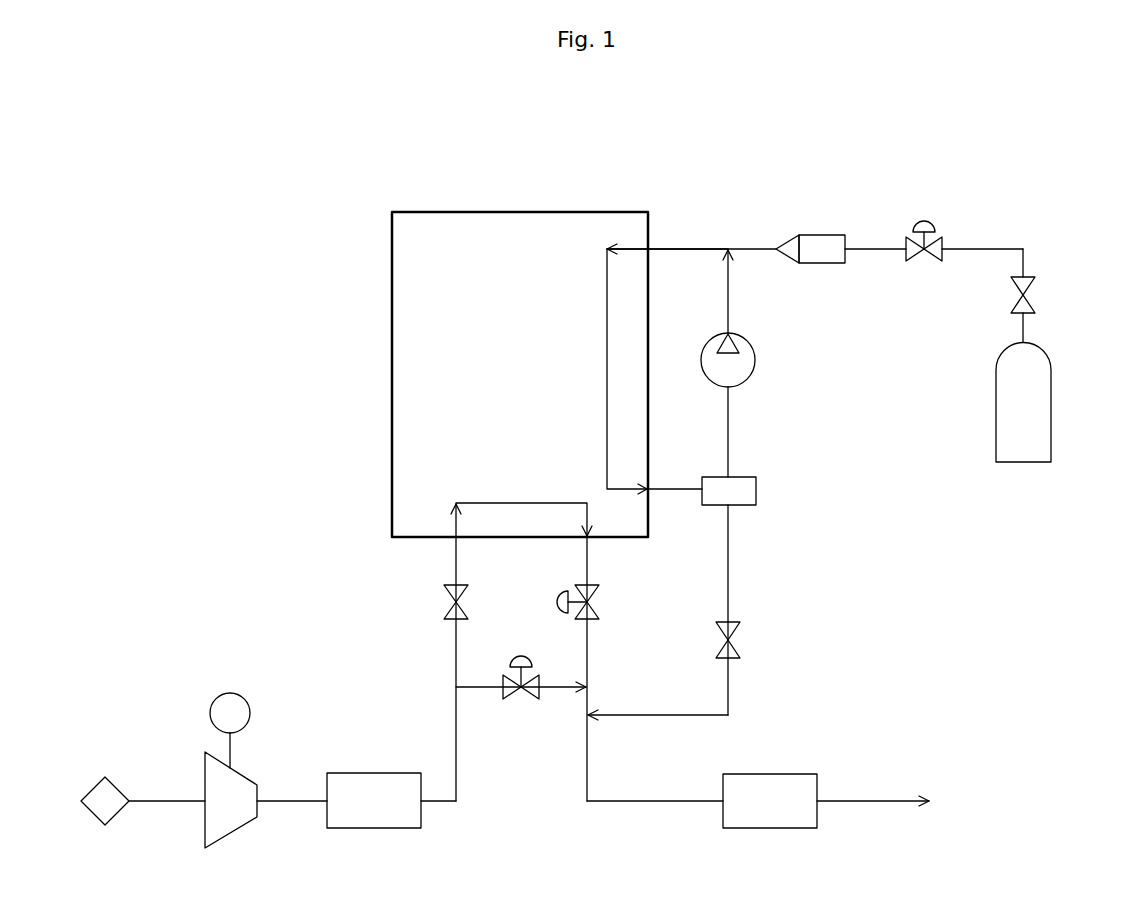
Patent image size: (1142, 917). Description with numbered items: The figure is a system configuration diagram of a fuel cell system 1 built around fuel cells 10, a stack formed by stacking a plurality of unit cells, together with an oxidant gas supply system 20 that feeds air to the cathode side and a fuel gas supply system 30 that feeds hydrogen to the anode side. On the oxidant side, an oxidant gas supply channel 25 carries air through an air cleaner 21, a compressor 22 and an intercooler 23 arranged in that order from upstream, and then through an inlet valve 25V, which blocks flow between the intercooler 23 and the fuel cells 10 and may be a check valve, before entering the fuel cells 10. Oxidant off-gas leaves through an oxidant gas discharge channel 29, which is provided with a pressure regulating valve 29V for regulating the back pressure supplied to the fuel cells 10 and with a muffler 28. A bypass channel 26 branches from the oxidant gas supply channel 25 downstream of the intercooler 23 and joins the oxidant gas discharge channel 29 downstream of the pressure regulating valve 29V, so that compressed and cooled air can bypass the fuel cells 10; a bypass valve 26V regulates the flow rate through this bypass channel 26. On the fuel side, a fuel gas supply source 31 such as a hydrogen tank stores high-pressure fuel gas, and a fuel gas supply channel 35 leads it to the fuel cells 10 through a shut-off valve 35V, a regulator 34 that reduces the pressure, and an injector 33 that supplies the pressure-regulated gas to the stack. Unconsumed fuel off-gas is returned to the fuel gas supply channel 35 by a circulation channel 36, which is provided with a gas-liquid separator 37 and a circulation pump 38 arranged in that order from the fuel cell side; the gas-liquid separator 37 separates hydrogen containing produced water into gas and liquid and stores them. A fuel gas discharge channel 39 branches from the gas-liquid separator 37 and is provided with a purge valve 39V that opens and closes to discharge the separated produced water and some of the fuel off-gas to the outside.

The fuel cell system 1 is at (996, 142).
The fuel cells 10 is at (472, 211).
The oxidant gas supply system 20 is at (263, 660).
The air cleaner 21 is at (92, 786).
The air compressor 22 is at (235, 831).
The intercooler 23 is at (378, 829).
The oxidant gas supply channel 25 is at (455, 711).
The inlet valve 25V is at (443, 603).
The bypass channel 26 is at (550, 692).
The bypass valve 26V is at (512, 700).
The muffler 28 is at (769, 829).
The oxidant gas discharge channel 29 is at (589, 752).
The pressure regulating valve 29V is at (599, 604).
The fuel gas supply system 30 is at (943, 501).
The fuel gas supply source 31 is at (1053, 411).
The injector 33 is at (821, 264).
The regulator 34 is at (914, 259).
The fuel gas supply channel 35 is at (749, 247).
The shut-off valve 35V is at (1036, 297).
The circulation channel 36 is at (730, 426).
The gas-liquid separator 37 is at (758, 491).
The circulation pump 38 is at (757, 361).
The fuel gas discharge channel 39 is at (730, 687).
The purge valve 39V is at (741, 645).